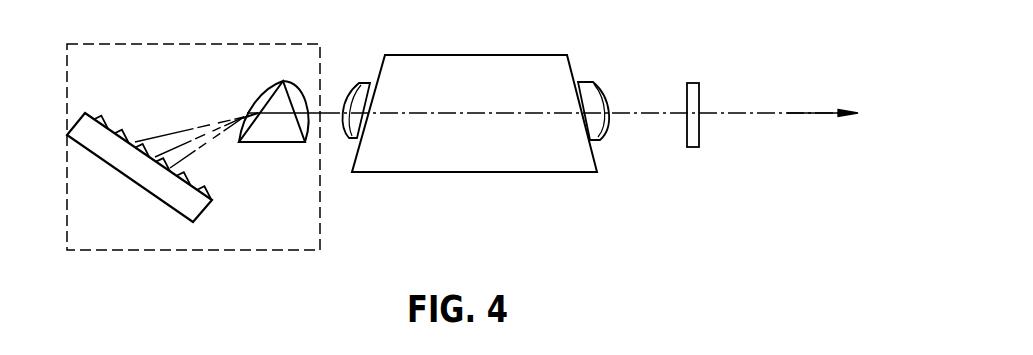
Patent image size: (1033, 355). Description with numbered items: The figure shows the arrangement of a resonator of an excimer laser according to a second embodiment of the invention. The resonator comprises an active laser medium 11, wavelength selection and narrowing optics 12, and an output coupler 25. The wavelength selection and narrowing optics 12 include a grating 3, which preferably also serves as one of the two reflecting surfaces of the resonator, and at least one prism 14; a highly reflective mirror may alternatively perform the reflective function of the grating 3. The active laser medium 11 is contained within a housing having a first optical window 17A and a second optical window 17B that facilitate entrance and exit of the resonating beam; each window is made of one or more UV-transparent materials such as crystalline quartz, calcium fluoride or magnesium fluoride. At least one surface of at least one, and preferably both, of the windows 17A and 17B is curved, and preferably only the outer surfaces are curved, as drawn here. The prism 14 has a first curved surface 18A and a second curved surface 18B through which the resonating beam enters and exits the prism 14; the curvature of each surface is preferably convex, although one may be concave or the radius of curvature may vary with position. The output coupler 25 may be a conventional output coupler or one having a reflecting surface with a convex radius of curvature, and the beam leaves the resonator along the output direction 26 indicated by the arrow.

The grating 3 is at (177, 200).
The active laser medium 11 is at (484, 158).
The wavelength selection and narrowing optics 12 is at (177, 75).
The prism 14 is at (285, 140).
The first optical window 17A is at (363, 82).
The second optical window 17B is at (597, 80).
The first curved surface 18A is at (262, 88).
The second curved surface 18B is at (293, 85).
The output coupler 25 is at (692, 83).
The output beam direction 26 is at (839, 114).